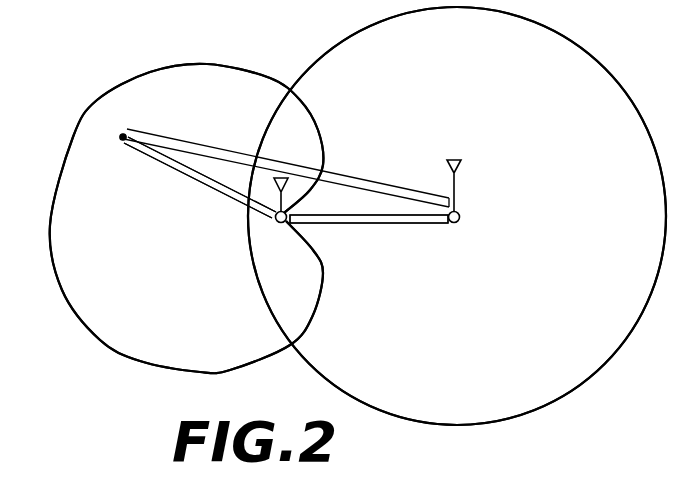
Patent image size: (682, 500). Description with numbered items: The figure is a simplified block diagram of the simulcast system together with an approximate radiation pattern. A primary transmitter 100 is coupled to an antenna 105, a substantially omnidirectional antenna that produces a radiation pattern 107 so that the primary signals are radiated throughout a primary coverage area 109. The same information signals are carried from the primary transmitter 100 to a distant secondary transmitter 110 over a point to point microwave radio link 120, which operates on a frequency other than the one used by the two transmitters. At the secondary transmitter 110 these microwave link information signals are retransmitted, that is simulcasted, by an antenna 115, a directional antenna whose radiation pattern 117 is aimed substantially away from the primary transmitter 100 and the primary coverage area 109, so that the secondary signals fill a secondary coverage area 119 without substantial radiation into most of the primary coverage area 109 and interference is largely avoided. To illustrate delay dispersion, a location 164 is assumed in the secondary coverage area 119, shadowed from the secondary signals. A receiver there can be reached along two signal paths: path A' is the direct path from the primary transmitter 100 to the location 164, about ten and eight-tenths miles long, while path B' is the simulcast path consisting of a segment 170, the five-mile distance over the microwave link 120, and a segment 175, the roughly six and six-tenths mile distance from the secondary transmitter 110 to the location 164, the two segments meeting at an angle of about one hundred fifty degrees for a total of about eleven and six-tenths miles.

The primary transmitter 100 is at (462, 219).
The antenna 105 is at (457, 160).
The radiation pattern 107 is at (541, 408).
The primary coverage area 109 is at (534, 38).
The secondary transmitter 110 is at (279, 224).
The antenna 115 is at (288, 167).
The radiation pattern 117 is at (140, 360).
The secondary coverage area 119 is at (68, 267).
The point to point microwave radio link 120 is at (322, 224).
The location 164 is at (118, 138).
The segment 170 is at (394, 222).
The segment 175 is at (228, 197).
The path A' is at (286, 167).
The path B' is at (200, 177).